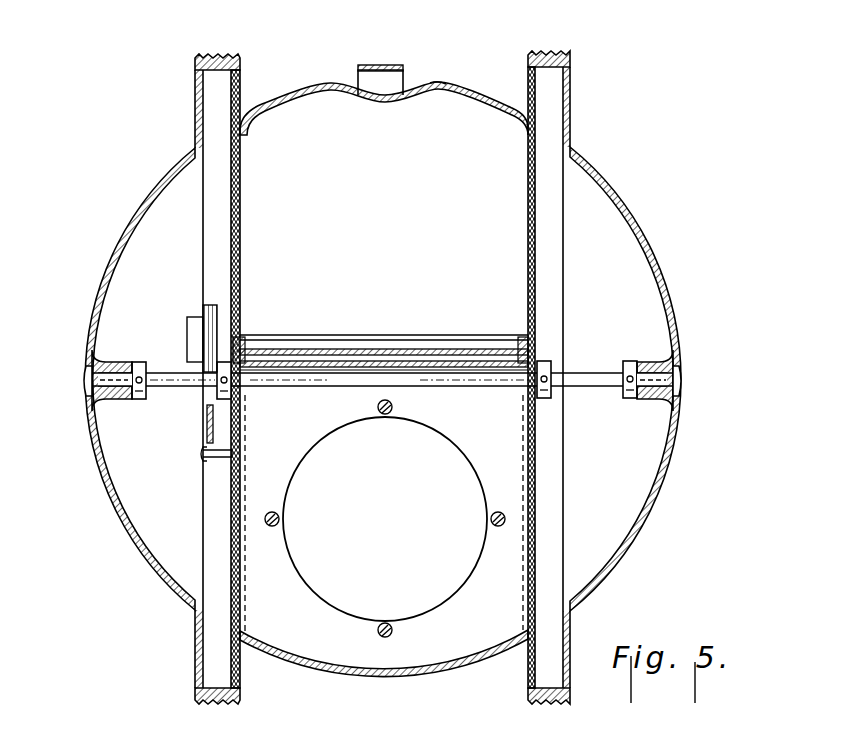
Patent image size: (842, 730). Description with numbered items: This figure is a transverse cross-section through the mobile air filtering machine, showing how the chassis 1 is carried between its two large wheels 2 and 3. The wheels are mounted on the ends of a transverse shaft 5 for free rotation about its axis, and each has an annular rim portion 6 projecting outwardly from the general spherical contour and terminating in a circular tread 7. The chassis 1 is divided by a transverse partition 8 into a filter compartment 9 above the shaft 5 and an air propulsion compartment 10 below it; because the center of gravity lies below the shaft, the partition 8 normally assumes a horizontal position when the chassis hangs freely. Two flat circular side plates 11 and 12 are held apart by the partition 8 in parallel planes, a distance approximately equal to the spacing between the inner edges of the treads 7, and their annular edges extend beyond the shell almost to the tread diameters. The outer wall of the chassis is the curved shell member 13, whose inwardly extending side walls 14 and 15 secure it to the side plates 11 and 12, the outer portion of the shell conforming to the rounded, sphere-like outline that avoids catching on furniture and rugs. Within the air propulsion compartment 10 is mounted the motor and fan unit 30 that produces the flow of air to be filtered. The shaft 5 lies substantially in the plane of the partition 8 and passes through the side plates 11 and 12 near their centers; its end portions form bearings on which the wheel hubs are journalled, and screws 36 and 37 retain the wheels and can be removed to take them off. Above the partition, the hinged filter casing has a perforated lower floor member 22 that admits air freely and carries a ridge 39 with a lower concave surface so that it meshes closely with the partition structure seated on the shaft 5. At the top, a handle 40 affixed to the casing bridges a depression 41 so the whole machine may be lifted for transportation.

The chassis 1 is at (347, 671).
The wheel 2 is at (109, 523).
The wheel 3 is at (641, 531).
The transverse shaft 5 is at (164, 373).
The annular rim portion 6 is at (195, 105).
The circular tread 7 is at (220, 53).
The transverse partition 8 is at (283, 368).
The filter compartment 9 is at (373, 224).
The air propulsion compartment 10 is at (493, 615).
The side plate 11 is at (222, 568).
The side plate 12 is at (563, 503).
The curved shell member 13 is at (470, 92).
The side wall 14 is at (240, 273).
The side wall 15 is at (528, 236).
The lower floor member 22 is at (312, 349).
The motor and fan unit 30 is at (373, 529).
The screw 36 is at (84, 386).
The screw 37 is at (683, 378).
The ridge 39 is at (388, 338).
The handle 40 is at (396, 64).
The depression 41 is at (438, 81).